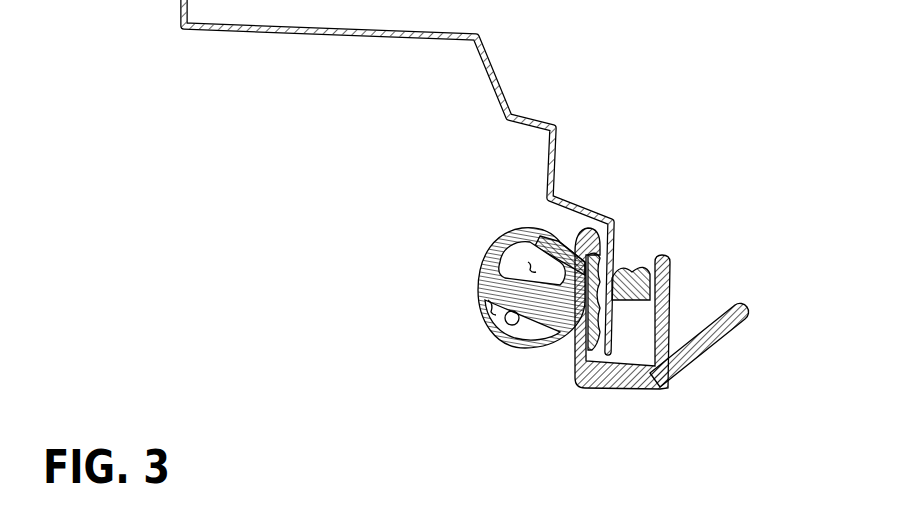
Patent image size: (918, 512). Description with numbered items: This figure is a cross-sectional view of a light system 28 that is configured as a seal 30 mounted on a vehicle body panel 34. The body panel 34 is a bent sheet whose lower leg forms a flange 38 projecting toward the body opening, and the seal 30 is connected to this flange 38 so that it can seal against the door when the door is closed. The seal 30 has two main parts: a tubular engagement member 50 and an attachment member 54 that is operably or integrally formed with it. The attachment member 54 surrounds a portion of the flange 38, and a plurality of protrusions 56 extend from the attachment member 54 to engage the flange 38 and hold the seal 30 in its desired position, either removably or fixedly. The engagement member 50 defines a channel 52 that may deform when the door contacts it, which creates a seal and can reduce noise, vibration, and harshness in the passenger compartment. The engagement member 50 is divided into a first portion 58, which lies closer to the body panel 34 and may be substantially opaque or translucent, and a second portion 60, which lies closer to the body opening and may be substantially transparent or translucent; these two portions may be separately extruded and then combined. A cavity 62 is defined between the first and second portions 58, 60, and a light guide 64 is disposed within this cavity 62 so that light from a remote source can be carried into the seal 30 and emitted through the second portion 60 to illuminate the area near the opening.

The light system 28 is at (665, 215).
The seal 30 is at (573, 366).
The body panel 34 is at (498, 82).
The flange 38 is at (667, 330).
The tubular engagement member 50 is at (478, 270).
The channel 52 is at (547, 250).
The attachment member 54 is at (630, 383).
The protrusions 56 is at (603, 342).
The first portion 58 is at (500, 246).
The second portion 60 is at (490, 330).
The cavity 62 is at (492, 300).
The light guide 64 is at (509, 327).